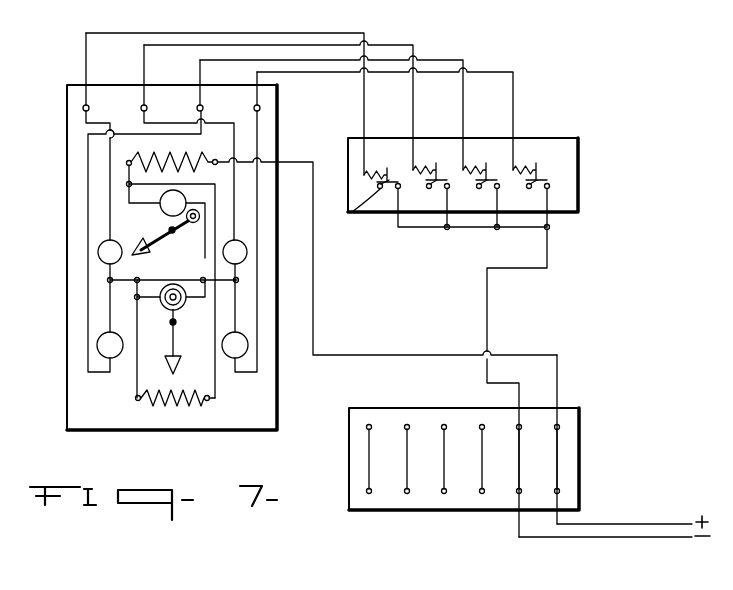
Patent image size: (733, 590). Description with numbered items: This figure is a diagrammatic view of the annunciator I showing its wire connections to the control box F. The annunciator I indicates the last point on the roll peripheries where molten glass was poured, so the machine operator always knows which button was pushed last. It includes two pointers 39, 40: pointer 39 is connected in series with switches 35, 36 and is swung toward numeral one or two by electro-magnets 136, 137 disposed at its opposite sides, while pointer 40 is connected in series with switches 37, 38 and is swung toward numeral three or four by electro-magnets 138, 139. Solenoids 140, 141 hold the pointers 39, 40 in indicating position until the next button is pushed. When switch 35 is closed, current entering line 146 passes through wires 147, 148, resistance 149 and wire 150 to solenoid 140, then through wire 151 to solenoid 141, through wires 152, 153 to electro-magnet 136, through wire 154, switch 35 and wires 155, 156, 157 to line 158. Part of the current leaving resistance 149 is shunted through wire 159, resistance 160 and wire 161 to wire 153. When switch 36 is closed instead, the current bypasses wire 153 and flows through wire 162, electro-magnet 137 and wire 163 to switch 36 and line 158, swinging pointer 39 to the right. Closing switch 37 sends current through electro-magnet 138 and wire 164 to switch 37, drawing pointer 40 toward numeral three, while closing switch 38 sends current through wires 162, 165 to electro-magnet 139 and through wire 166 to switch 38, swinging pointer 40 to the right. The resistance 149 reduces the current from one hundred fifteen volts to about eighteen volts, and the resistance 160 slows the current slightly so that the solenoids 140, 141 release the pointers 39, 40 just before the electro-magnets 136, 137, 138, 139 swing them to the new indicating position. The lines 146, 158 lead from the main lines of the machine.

The annunciator I is at (290, 130).
The control box F is at (565, 147).
The wire 163 is at (195, 47).
The wire 154 is at (110, 156).
The resistance 149 is at (152, 156).
The wire 159 is at (216, 197).
The wire 150 is at (127, 187).
The solenoid 140 is at (163, 212).
The pointer 39 is at (156, 242).
The electro-magnet 136 is at (98, 252).
The wire 162 is at (170, 278).
The wire 151 is at (205, 252).
The electro-magnet 137 is at (247, 250).
The wire 164 is at (67, 296).
The wire 166 is at (259, 294).
The wire 153 is at (112, 283).
The wire 152 is at (168, 306).
The solenoid 141 is at (178, 315).
The electro-magnet 138 is at (97, 345).
The pointer 40 is at (170, 343).
The wire 165 is at (236, 318).
The electro-magnet 139 is at (248, 345).
The wire 161 is at (137, 375).
The resistance 160 is at (172, 406).
The switch 35 is at (350, 214).
The switch 36 is at (432, 190).
The switch 37 is at (488, 190).
The switch 38 is at (535, 190).
The wire 155 is at (449, 230).
The wire 156 is at (489, 311).
The wire 148 is at (412, 355).
The wire 147 is at (558, 445).
The wire 157 is at (517, 478).
The line 146 is at (651, 498).
The line 158 is at (580, 538).